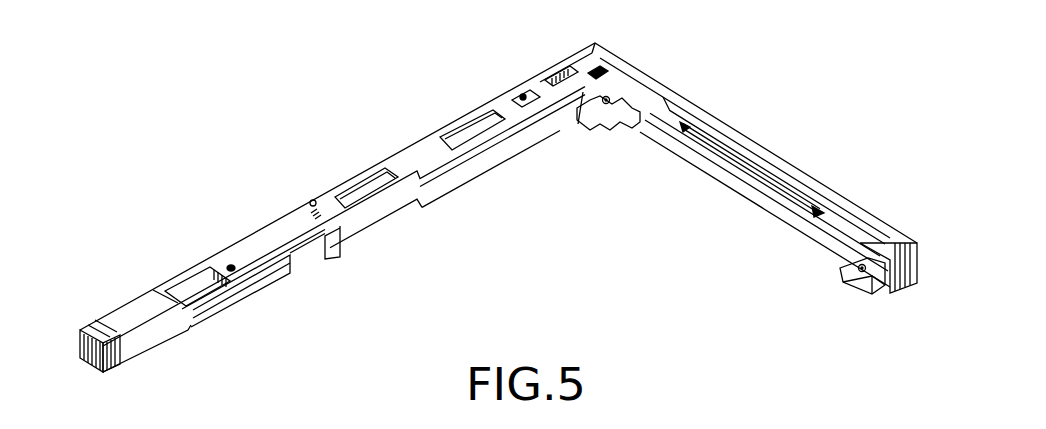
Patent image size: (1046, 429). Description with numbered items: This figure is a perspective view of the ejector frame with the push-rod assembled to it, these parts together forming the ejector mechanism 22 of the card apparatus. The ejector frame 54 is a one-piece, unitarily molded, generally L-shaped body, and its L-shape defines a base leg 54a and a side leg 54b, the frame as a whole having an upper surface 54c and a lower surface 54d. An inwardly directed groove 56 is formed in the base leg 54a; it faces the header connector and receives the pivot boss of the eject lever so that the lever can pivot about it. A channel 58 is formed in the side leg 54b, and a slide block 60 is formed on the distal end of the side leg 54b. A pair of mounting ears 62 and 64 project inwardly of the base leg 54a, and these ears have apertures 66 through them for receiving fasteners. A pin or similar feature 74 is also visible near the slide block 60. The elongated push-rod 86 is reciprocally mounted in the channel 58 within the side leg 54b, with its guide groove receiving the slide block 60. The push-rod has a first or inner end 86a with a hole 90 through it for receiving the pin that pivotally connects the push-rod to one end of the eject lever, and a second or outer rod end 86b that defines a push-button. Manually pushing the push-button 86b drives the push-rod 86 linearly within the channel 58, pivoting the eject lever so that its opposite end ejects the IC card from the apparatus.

The ejector mechanism 22 is at (432, 96).
The ejector frame 54 is at (640, 56).
The base leg 54a is at (757, 141).
The side leg 54b is at (400, 150).
The upper surface 54c is at (797, 181).
The lower surface 54d is at (787, 207).
The groove 56 is at (762, 184).
The channel 58 is at (562, 78).
The slide block 60 is at (205, 275).
The mounting ear 62 is at (858, 292).
The mounting ear 64 is at (628, 120).
The apertures 66 is at (590, 115).
The pin 74 is at (236, 262).
The push-rod 86 is at (303, 253).
The inner end 86a is at (537, 115).
The outer rod end 86b is at (148, 340).
The hole 90 is at (523, 94).